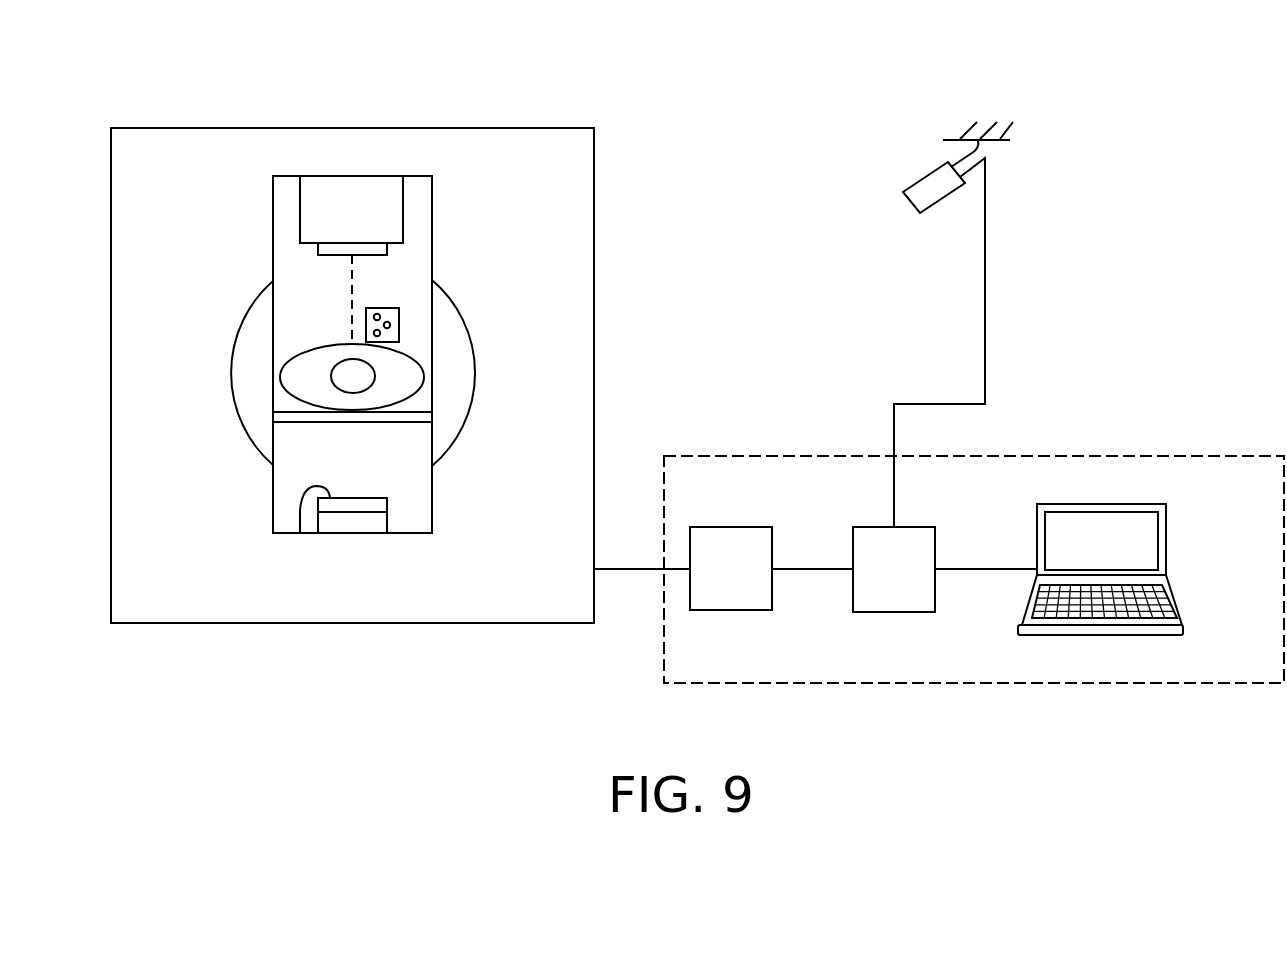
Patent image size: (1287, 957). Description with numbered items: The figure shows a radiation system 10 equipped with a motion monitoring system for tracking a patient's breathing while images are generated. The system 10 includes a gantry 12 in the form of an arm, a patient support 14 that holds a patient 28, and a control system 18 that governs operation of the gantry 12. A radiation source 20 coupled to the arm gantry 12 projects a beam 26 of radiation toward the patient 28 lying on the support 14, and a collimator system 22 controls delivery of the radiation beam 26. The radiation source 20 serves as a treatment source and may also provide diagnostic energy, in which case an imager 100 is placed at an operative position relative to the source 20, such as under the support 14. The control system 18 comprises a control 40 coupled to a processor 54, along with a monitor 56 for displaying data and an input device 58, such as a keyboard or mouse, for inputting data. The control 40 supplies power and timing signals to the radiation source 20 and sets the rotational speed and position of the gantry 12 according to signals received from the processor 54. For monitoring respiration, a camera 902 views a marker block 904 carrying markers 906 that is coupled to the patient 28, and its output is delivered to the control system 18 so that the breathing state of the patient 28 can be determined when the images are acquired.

The system 10 is at (616, 44).
The gantry 12 is at (388, 231).
The patient support 14 is at (407, 425).
The control system 18 is at (1150, 456).
The radiation source 20 is at (335, 208).
The collimator system 22 is at (342, 257).
The beam 26 is at (352, 282).
The patient 28 is at (418, 375).
The control 40 is at (718, 583).
The processor 54 is at (881, 583).
The monitor 56 is at (1167, 530).
The input device 58 is at (1180, 613).
The imager 100 is at (300, 533).
The camera 902 is at (922, 203).
The marker block 904 is at (372, 318).
The markers 906 is at (399, 323).